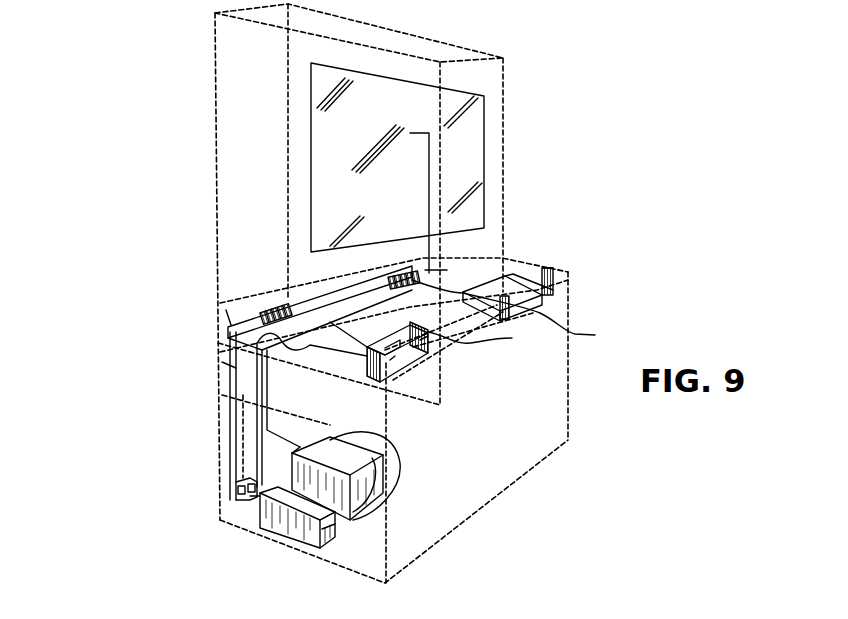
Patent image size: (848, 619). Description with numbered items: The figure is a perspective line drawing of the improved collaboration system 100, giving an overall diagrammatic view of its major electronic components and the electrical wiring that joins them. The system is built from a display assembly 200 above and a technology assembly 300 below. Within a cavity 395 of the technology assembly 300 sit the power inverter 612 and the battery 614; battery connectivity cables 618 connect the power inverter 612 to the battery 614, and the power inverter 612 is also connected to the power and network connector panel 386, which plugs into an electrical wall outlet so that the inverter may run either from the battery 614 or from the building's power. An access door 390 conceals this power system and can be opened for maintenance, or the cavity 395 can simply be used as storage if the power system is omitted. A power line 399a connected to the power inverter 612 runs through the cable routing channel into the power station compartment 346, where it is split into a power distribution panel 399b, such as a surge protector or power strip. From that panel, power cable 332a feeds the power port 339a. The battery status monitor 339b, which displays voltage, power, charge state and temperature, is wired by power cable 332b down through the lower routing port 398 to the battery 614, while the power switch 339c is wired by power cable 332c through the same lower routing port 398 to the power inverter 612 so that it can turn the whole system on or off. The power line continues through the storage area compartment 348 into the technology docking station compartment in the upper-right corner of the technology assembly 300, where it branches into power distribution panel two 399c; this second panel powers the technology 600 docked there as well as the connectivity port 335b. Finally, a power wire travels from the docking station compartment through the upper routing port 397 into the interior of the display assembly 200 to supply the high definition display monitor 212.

The improved collaboration system 100 is at (130, 45).
The display assembly 200 is at (115, 180).
The technology assembly 300 is at (115, 405).
The high definition display monitor 212 is at (475, 124).
The storage area compartment 348 is at (352, 290).
The lower routing port 398 is at (227, 342).
The power station compartment 346 is at (226, 310).
The power line 399a is at (227, 368).
The power distribution panel 399b is at (278, 308).
The power distribution panel two 399c is at (410, 274).
The power cable 332a is at (407, 339).
The power cable 332b is at (268, 372).
The power cable 332c is at (256, 412).
The power and network connector panel 386 is at (230, 484).
The access door 390 is at (297, 433).
The power port 339a is at (430, 338).
The battery status monitor 339b is at (420, 340).
The power switch 339c is at (390, 360).
The connectivity port 335b is at (526, 312).
The upper routing port 397 is at (430, 270).
The technology 600 is at (558, 292).
The battery connectivity cables 618 is at (395, 450).
The power inverter 612 is at (308, 533).
The battery 614 is at (383, 503).
The cavity 395 is at (412, 518).